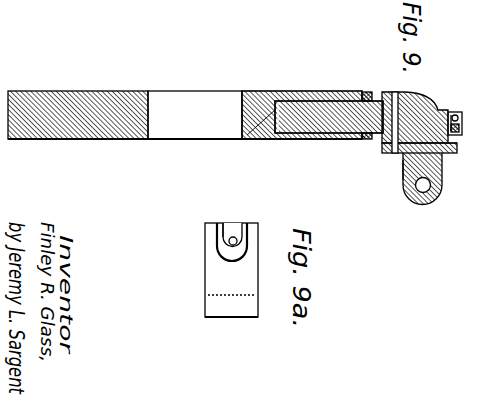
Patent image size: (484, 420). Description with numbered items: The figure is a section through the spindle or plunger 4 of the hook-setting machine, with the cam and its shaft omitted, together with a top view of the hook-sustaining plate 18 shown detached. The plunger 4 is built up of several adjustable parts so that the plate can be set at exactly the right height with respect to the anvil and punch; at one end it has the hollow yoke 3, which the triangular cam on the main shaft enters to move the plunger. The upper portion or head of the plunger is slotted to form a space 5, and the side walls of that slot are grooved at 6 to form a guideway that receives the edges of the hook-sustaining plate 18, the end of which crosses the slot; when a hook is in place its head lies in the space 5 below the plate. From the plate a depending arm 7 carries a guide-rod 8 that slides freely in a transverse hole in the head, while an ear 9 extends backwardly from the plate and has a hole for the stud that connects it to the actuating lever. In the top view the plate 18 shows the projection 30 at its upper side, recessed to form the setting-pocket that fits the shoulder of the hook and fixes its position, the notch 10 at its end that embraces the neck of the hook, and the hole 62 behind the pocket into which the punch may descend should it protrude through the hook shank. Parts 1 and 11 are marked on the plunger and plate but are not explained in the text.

In FIG. 9, the pin 1 is at (397, 192).
In FIG. 9, the hollow yoke 3 is at (200, 91).
In FIG. 9, the spindle or plunger 4 is at (304, 92).
In FIG. 9, the space 5 is at (454, 112).
In FIG. 9, the grooves 6 is at (428, 101).
In FIG. 9, the depending arm 7 is at (437, 199).
In FIG. 9, the guide-rod 8 is at (393, 92).
In FIG. 9, the ear 9 is at (444, 176).
In FIG. 9, the notch 10 is at (474, 150).
In FIG. 9A, the notch 10 is at (226, 232).
In FIG. 9A, the opening 11 is at (221, 232).
In FIG. 9A, the hook-sustaining plate 18 is at (252, 268).
In FIG. 9, the projection 30 is at (462, 128).
In FIG. 9A, the projection 30 is at (222, 253).
In FIG. 9, the hole 62 is at (458, 118).
In FIG. 9A, the hole 62 is at (237, 241).